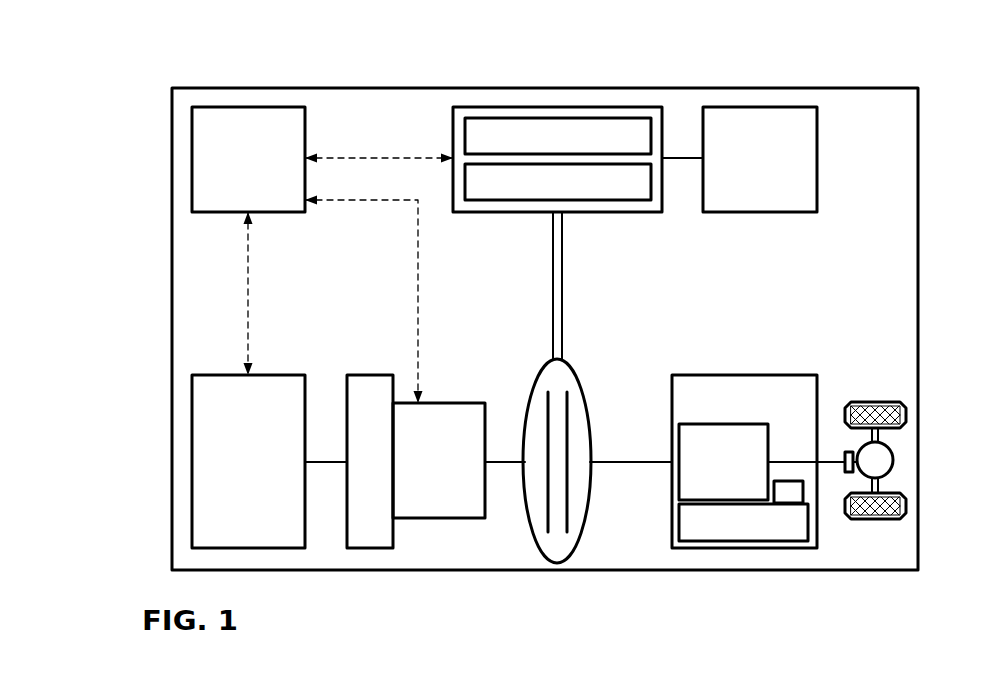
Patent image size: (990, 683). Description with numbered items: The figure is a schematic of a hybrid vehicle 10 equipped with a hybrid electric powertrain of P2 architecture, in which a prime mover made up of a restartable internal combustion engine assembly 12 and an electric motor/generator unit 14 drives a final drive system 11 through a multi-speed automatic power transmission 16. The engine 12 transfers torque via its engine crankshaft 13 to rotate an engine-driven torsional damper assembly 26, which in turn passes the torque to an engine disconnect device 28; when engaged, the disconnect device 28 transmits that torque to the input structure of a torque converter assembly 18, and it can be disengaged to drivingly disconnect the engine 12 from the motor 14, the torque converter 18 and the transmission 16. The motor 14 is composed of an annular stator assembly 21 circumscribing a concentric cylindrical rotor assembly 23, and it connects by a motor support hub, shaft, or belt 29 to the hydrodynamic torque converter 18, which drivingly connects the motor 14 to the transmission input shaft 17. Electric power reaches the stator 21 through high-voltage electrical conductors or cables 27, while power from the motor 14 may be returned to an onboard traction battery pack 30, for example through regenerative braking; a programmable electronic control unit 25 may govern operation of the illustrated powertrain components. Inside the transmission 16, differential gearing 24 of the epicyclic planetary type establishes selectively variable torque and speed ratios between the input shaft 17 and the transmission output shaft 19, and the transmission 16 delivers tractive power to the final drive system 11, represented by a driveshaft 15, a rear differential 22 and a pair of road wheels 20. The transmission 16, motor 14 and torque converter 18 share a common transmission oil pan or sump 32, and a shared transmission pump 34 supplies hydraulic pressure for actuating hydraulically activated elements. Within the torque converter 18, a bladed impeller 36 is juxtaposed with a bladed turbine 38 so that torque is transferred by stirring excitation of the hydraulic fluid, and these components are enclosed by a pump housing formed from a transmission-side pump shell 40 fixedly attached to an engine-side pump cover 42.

The hybrid vehicle 10 is at (155, 68).
The final drive system 11 is at (898, 282).
The internal combustion engine assembly 12 is at (203, 375).
The engine crankshaft 13 is at (325, 462).
The electric motor/generator unit 14 is at (470, 107).
The driveshaft 15 is at (835, 462).
The multi-speed automatic power transmission 16 is at (683, 375).
The transmission input shaft 17 is at (625, 462).
The torque converter assembly 18 is at (586, 515).
The transmission output shaft 19 is at (502, 462).
The road wheels 20 is at (873, 402).
The stator assembly 21 is at (465, 124).
The rear differential 22 is at (893, 458).
The rotor assembly 23 is at (465, 175).
The differential gearing 24 is at (732, 424).
The electronic control unit 25 is at (201, 107).
The torsional damper assembly 26 is at (385, 375).
The electrical conductors/cables 27 is at (676, 158).
The engine disconnect device 28 is at (456, 403).
The motor support hub, shaft, or belt 29 is at (552, 240).
The traction battery pack 30 is at (733, 107).
The transmission oil pan 32 is at (722, 522).
The transmission pump 34 is at (786, 492).
The impeller 36 is at (548, 532).
The turbine 38 is at (566, 530).
The pump shell 40 is at (590, 492).
The pump cover 42 is at (529, 517).